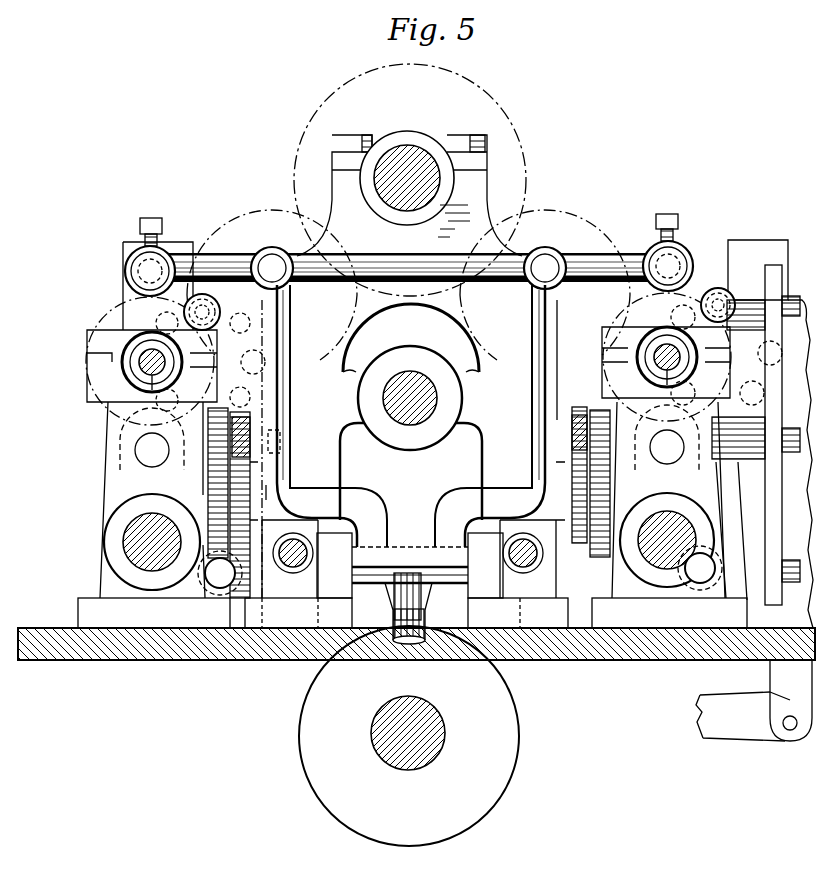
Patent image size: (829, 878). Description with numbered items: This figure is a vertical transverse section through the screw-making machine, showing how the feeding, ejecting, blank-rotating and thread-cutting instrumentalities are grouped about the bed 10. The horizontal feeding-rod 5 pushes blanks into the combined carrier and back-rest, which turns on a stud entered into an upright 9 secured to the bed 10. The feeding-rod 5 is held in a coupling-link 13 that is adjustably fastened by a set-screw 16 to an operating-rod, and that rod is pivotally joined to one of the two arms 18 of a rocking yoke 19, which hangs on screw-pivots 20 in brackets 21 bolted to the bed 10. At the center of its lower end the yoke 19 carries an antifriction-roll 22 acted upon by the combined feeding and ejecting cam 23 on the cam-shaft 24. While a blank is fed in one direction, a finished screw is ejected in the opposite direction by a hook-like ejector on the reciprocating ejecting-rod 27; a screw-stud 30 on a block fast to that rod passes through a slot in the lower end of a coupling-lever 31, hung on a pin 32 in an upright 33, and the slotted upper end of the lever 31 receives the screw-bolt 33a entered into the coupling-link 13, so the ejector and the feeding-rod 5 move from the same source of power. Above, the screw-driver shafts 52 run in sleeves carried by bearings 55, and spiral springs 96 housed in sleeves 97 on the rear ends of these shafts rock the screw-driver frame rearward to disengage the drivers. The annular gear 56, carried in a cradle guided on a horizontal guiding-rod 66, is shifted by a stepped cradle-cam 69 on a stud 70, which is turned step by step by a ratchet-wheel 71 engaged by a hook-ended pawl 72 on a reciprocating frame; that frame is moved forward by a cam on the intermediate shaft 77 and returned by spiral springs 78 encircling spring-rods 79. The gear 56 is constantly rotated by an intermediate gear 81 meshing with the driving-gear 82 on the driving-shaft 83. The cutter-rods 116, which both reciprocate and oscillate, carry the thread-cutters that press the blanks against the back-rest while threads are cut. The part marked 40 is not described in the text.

The feeding-rod 5 is at (459, 309).
The upright 9 is at (180, 252).
The bed 10 is at (45, 640).
The coupling-link 13 is at (215, 275).
The set-screw 16 is at (409, 244).
The arms 18 is at (283, 395).
The rocking yoke 19 is at (410, 563).
The screw-pivots 20 is at (410, 565).
The brackets 21 is at (412, 613).
The antifriction-roll 22 is at (392, 633).
The combined feeding and ejecting cam 23 is at (409, 736).
The cam-shaft 24 is at (420, 704).
The ejecting-rod 27 is at (460, 570).
The screw-stud 30 is at (791, 560).
The coupling-lever 31 is at (775, 386).
The pin 32 is at (791, 428).
The upright 33 is at (738, 450).
The screw-bolt 33a is at (796, 300).
The arm 40 is at (754, 700).
The screw-driver shaft 52 is at (110, 405).
The bearings 55 is at (408, 350).
The annular gear 56 is at (112, 325).
The guiding-rod 66 is at (409, 437).
The stepped cradle-cam 69 is at (215, 488).
The stud 70 is at (262, 487).
The ratchet-wheel 71 is at (250, 480).
The pawl 72 is at (245, 440).
The intermediate shaft 77 is at (411, 412).
The spiral springs 78 is at (285, 545).
The spring-rods 79 is at (293, 560).
The intermediate gear 81 is at (268, 228).
The driving-gear 82 is at (410, 180).
The driving-shaft 83 is at (418, 148).
The spiral springs 96 is at (140, 370).
The sleeves 97 is at (125, 362).
The cutter-rods 116 is at (123, 537).